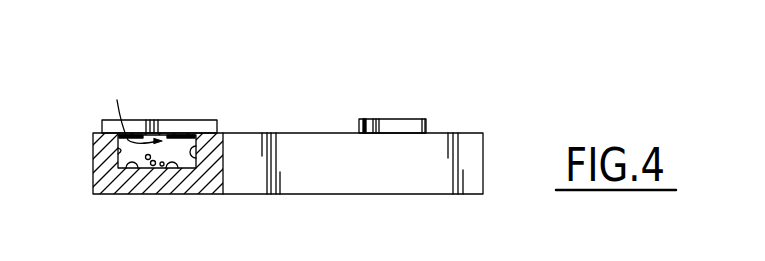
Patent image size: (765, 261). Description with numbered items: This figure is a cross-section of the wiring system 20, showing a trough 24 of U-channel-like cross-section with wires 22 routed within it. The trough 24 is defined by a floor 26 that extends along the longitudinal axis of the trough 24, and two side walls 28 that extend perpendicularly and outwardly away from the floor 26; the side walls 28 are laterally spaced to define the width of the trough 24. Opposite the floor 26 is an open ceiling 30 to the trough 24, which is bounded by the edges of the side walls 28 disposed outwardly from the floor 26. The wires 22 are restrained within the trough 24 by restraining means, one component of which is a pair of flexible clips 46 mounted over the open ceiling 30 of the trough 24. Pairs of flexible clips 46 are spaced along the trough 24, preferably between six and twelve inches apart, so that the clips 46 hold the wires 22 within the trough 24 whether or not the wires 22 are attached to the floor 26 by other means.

The wiring system 20 is at (318, 67).
The wires 22 is at (183, 172).
The trough 24 is at (155, 103).
The floor 26 is at (124, 167).
The side walls 28 is at (118, 149).
The open ceiling 30 is at (127, 106).
The flexible clips 46 is at (175, 122).